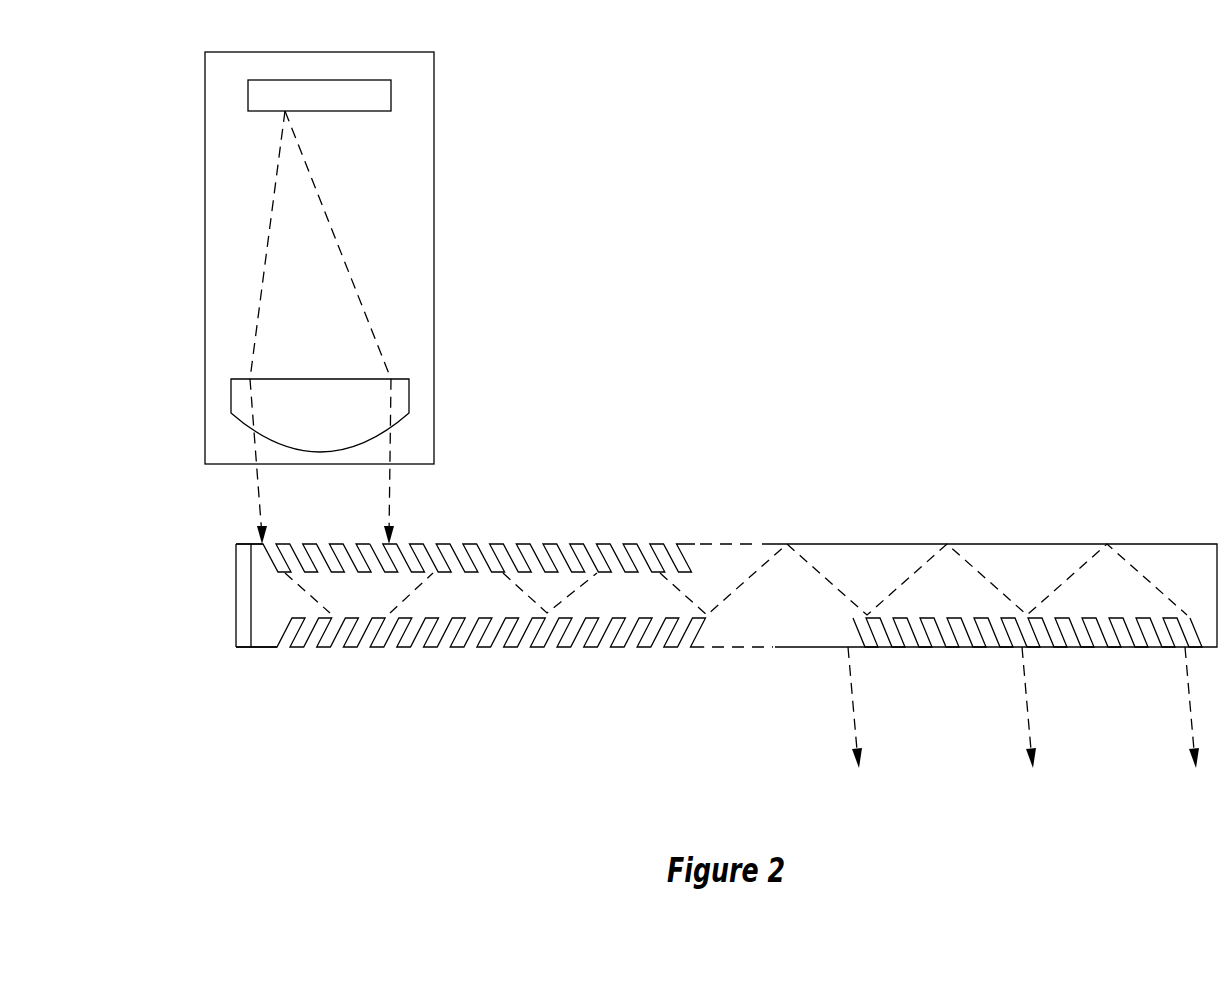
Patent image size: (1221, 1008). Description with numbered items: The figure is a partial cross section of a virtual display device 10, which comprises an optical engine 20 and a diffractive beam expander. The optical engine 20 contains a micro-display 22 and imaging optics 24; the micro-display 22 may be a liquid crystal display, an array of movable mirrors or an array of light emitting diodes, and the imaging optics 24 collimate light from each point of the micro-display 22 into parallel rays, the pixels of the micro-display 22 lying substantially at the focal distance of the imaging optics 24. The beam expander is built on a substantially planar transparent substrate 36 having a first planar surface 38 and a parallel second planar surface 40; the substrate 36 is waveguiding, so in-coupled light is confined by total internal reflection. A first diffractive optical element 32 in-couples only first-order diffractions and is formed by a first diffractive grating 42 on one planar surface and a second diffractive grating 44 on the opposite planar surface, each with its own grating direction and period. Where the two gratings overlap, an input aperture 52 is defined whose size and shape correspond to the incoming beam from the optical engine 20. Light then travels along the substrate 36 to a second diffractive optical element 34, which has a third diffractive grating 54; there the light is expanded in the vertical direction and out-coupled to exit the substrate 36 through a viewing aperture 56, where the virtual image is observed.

The virtual display device 10 is at (843, 249).
The optical engine 20 is at (434, 104).
The micro-display 22 is at (258, 97).
The imaging optics 24 is at (246, 397).
The first diffractive optical element 32 is at (265, 702).
The second diffractive optical element 34 is at (1217, 527).
The substrate 36 is at (236, 585).
The first planar surface 38 is at (241, 543).
The second planar surface 40 is at (242, 648).
The first diffractive grating 42 is at (447, 542).
The second diffractive grating 44 is at (562, 648).
The input aperture 52 is at (331, 542).
The third diffractive grating 54 is at (965, 648).
The viewing aperture 56 is at (828, 780).